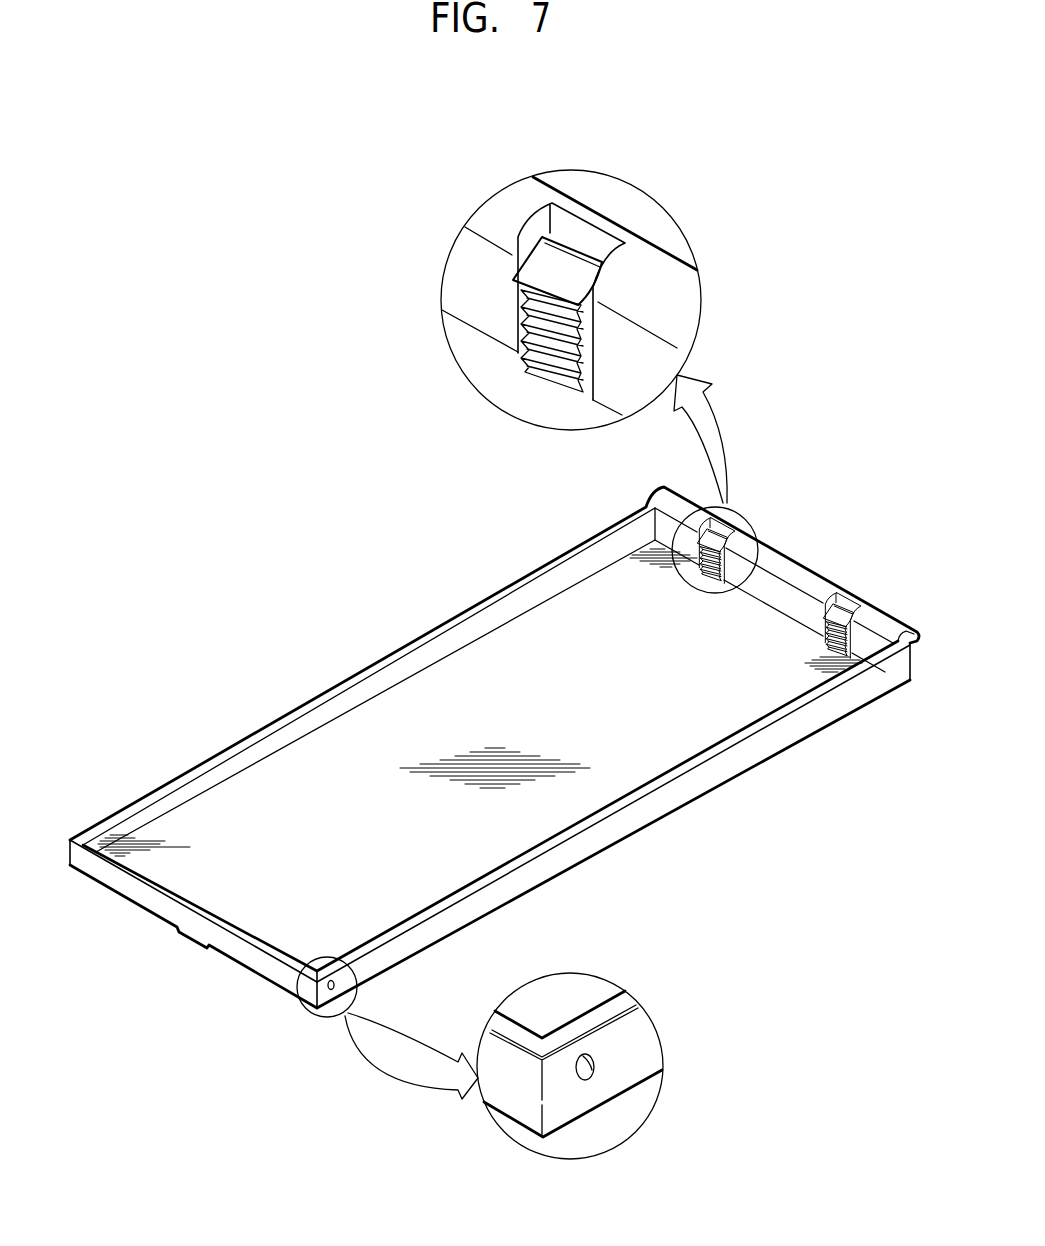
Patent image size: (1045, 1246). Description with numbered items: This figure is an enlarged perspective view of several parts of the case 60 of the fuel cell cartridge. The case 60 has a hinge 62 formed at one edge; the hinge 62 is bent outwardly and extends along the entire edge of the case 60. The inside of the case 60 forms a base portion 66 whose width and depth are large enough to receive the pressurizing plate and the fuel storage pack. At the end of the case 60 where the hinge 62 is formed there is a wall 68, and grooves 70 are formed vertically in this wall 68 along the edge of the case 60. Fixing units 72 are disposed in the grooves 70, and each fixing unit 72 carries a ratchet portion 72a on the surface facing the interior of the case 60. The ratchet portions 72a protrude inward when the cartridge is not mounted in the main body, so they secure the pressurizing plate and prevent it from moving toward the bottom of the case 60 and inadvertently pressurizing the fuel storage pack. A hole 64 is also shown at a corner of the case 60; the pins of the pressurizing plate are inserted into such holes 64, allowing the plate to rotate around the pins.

The case 60 is at (745, 767).
The hinge 62 is at (502, 210).
The hole 64 is at (593, 1067).
The base portion 66 is at (747, 630).
The wall 68 is at (463, 280).
The groove 70 is at (526, 206).
The fixing unit 72 is at (563, 262).
The ratchet portion 72a is at (542, 330).